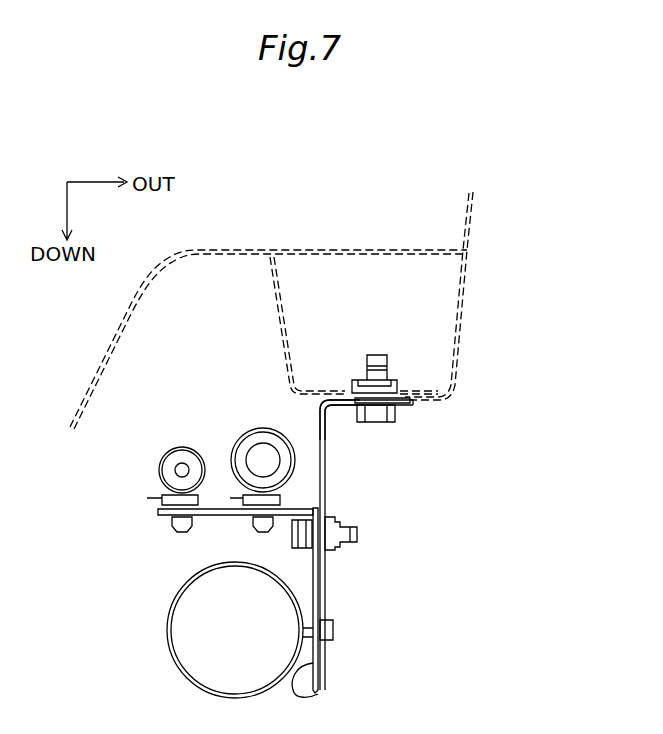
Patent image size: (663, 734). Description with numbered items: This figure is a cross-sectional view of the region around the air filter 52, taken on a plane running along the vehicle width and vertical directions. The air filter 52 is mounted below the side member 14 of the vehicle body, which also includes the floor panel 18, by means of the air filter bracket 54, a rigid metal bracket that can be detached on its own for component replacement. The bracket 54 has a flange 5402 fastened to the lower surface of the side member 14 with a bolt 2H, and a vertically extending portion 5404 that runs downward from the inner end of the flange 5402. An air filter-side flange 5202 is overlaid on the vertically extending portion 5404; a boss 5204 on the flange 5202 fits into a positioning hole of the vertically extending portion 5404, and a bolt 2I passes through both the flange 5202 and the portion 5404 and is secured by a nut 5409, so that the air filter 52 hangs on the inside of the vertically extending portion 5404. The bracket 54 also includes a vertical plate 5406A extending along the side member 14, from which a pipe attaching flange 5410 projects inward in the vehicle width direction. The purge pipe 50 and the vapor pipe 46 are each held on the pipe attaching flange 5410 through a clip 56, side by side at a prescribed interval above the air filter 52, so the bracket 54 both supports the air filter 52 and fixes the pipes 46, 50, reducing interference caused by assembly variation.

The floor panel 18 is at (358, 252).
The side member 14 is at (432, 400).
The air filter bracket 54 is at (338, 495).
The vertical plate 5406A is at (305, 425).
The flange 5402 is at (340, 403).
The bolt 2H is at (395, 417).
The vapor pipe 46 is at (265, 428).
The purge pipe 50 is at (172, 450).
The clip 56 is at (229, 512).
The pipe attaching flange 5410 is at (217, 516).
The bolt 2I is at (282, 534).
The nut 5409 is at (327, 515).
The vertically extending portion 5404 is at (327, 573).
The air filter 52 is at (170, 647).
The boss 5204 is at (333, 628).
The air filter-side flange 5202 is at (312, 697).